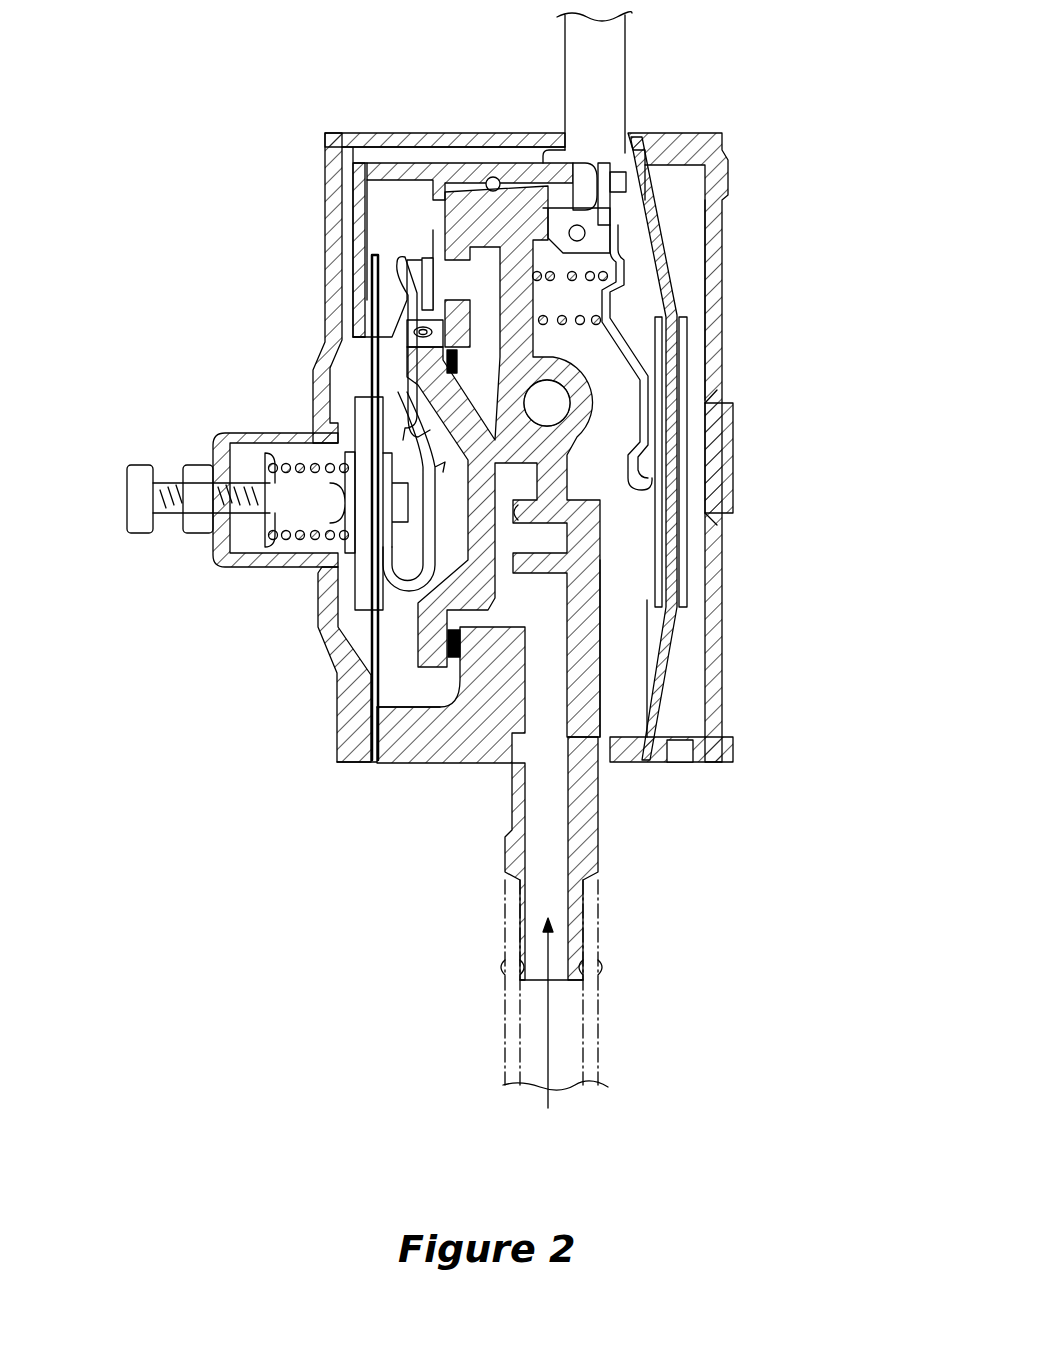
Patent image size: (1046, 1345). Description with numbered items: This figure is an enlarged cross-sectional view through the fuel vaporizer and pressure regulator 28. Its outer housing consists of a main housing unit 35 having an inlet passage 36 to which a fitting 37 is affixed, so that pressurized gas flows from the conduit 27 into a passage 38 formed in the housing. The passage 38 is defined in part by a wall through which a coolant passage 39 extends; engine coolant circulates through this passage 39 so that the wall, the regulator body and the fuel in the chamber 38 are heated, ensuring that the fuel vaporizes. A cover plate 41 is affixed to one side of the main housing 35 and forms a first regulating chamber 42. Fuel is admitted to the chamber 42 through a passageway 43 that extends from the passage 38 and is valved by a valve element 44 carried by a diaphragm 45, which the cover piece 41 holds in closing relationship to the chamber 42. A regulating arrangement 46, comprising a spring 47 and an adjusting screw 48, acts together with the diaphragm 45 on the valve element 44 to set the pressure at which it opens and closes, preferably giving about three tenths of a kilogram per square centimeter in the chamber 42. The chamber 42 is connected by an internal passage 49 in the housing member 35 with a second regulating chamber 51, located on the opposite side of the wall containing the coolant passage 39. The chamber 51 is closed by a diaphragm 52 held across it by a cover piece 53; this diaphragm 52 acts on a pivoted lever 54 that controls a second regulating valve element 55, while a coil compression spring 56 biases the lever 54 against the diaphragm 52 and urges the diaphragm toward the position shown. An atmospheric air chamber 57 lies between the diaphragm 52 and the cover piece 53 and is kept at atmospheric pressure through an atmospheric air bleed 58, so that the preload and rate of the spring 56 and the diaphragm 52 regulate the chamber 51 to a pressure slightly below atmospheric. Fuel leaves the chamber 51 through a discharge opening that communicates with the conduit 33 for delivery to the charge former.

The conduit 27 is at (598, 1033).
The vaporizer pressure regulator 28 is at (296, 748).
The conduit 33 is at (628, 33).
The main housing unit 35 is at (425, 763).
The inlet passage 36 is at (527, 660).
The fitting 37 is at (600, 845).
The passage 38 is at (498, 415).
The passage 39 is at (578, 165).
The cover plate 41 is at (344, 763).
The first regulating chamber 42 is at (412, 216).
The passageway 43 is at (447, 262).
The valve element 44 is at (433, 250).
The diaphragm 45 is at (377, 360).
The regulating arrangement 46 is at (226, 590).
The spring 47 is at (302, 545).
The adjusting screw 48 is at (142, 535).
The internal passage 49 is at (478, 193).
The second regulating chamber 51 is at (646, 546).
The diaphragm 52 is at (668, 650).
The cover piece 53 is at (722, 605).
The pivoted lever 54 is at (618, 400).
The second regulating valve element 55 is at (583, 175).
The coil compression spring 56 is at (540, 297).
The atmospheric air chamber 57 is at (686, 210).
The atmospheric air bleed 58 is at (682, 762).